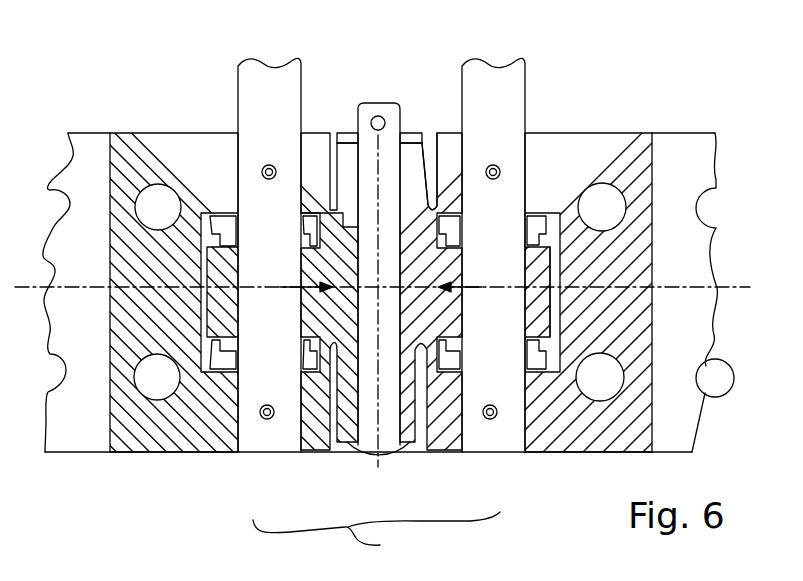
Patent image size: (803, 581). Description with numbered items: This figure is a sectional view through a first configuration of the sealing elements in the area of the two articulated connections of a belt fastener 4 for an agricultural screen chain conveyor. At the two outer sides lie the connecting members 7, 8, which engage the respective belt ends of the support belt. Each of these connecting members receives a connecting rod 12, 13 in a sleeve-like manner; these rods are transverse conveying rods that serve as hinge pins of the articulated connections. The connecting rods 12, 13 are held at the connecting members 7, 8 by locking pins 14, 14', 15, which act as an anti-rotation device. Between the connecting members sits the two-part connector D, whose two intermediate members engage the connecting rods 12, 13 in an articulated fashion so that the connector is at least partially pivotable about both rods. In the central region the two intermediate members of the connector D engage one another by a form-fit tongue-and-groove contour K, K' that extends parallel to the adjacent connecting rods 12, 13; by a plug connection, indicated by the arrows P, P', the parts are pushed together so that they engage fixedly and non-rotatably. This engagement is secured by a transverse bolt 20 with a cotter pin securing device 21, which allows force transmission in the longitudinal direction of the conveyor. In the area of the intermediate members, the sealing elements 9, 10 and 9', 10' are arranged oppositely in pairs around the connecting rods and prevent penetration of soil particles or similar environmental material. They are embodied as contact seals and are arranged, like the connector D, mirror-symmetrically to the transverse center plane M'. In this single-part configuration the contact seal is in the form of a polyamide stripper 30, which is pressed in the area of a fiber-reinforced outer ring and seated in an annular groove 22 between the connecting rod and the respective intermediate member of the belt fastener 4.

The belt fastener 4 is at (636, 58).
The connecting member 7 is at (688, 133).
The connecting member 8 is at (88, 133).
The sealing element 9 is at (437, 149).
The sealing element 9' is at (228, 417).
The sealing element 10 is at (552, 432).
The sealing element 10' is at (230, 164).
The connecting rod 12 is at (525, 62).
The connecting rod 13 is at (247, 75).
The locking pin 14 is at (492, 140).
The locking pin 14' is at (266, 141).
The locking pin 15 is at (267, 400).
The transverse bolt 20 is at (373, 450).
The cotter pin securing device 21 is at (379, 118).
The annular groove 22 is at (525, 212).
The polyamide stripper 30 is at (527, 213).
The tongue-and-groove contour K is at (287, 312).
The tongue-and-groove contour K' is at (489, 309).
The plug connection direction P is at (472, 260).
The plug connection direction P' is at (295, 261).
The transverse center plane M' is at (384, 476).
The connector D is at (376, 535).